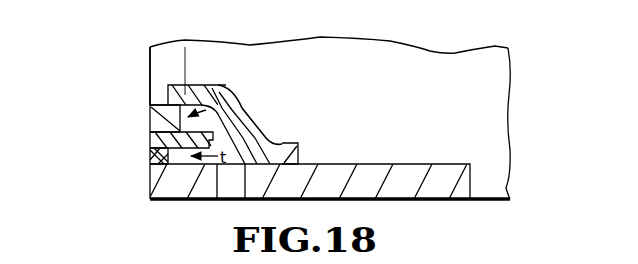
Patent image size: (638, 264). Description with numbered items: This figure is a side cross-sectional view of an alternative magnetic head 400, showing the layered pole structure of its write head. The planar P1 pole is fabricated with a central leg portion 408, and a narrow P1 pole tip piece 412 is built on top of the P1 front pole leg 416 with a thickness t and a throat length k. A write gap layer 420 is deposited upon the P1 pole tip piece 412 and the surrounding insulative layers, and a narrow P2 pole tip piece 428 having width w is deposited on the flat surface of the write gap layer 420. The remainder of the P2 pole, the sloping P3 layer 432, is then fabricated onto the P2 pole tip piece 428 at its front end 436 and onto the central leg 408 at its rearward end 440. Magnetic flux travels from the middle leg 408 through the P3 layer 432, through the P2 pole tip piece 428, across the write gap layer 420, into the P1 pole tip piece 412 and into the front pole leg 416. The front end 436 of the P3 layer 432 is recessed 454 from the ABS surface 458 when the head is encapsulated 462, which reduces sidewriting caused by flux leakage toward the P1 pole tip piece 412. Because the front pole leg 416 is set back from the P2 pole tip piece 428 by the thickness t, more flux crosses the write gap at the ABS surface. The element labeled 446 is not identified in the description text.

The magnetic head 400 is at (554, 79).
The central leg portion 408 is at (442, 183).
The P1 pole tip piece 412 is at (152, 155).
The P1 front pole leg 416 is at (152, 175).
The write gap layer 420 is at (160, 137).
The P2 pole tip piece 428 is at (158, 120).
The P2 pole remainder (P3 layer) 432 is at (255, 112).
The front end of the P3 layer 436 is at (185, 40).
The rearward end of the P3 layer 440 is at (283, 143).
The top layer 446 is at (202, 87).
The recess 454 is at (157, 93).
The ABS surface 458 is at (150, 55).
The encapsulation 462 is at (428, 62).